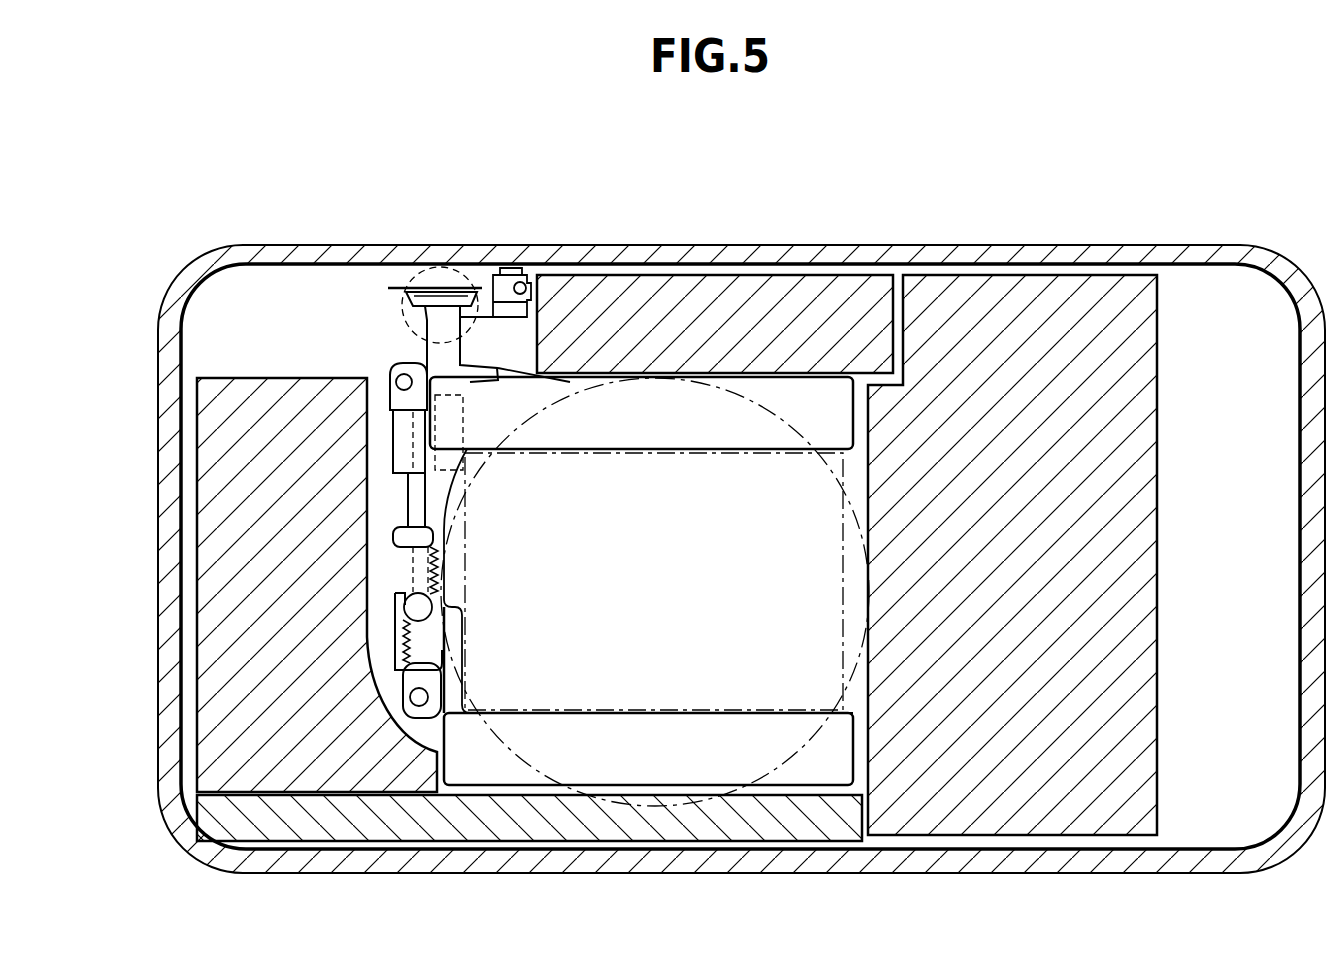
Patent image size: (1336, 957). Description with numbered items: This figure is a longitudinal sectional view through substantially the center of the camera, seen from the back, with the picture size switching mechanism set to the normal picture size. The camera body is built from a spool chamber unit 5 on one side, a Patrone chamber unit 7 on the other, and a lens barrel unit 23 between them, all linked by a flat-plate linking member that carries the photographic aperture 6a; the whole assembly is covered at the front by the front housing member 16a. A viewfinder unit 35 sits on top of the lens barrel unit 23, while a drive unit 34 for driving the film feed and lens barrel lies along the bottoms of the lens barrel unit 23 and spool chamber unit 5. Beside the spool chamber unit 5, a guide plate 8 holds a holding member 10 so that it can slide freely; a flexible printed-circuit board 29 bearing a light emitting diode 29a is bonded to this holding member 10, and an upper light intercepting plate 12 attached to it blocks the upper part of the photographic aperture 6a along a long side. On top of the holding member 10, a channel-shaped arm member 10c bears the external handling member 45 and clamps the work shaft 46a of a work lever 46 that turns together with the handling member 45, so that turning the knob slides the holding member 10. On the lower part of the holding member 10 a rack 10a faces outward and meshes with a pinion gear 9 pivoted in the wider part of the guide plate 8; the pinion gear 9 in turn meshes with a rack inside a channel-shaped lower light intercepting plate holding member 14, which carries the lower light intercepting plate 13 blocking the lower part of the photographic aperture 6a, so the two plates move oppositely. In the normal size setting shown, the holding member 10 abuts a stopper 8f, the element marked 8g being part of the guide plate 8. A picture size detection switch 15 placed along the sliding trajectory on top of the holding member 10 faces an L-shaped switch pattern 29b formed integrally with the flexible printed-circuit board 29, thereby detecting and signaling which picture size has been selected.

The spool chamber unit 5 is at (285, 388).
The photographic aperture 6a is at (537, 670).
The Patrone chamber unit 7 is at (1148, 512).
The guide plate 8 is at (405, 315).
The stopper 8f is at (383, 403).
The engaging head 8g is at (405, 521).
The pinion gear 9 is at (417, 600).
The holding member 10 is at (415, 360).
The rack 10a is at (433, 547).
The arm member 10c is at (522, 273).
The upper light intercepting plate 12 is at (600, 430).
The lower light intercepting plate 13 is at (605, 727).
The lower light intercepting plate holding member 14 is at (395, 602).
The picture size detection switch 15 is at (480, 378).
The front housing member 16a is at (985, 247).
The lens barrel unit 23 is at (797, 425).
The flexible printed-circuit board 29 is at (447, 290).
The light emitting diode 29a is at (405, 300).
The picture size detection switch pattern 29b is at (490, 368).
The drive unit 34 is at (597, 828).
The viewfinder unit 35 is at (713, 283).
The handling member 45 is at (400, 286).
The work lever 46 is at (483, 292).
The work shaft 46a is at (532, 287).